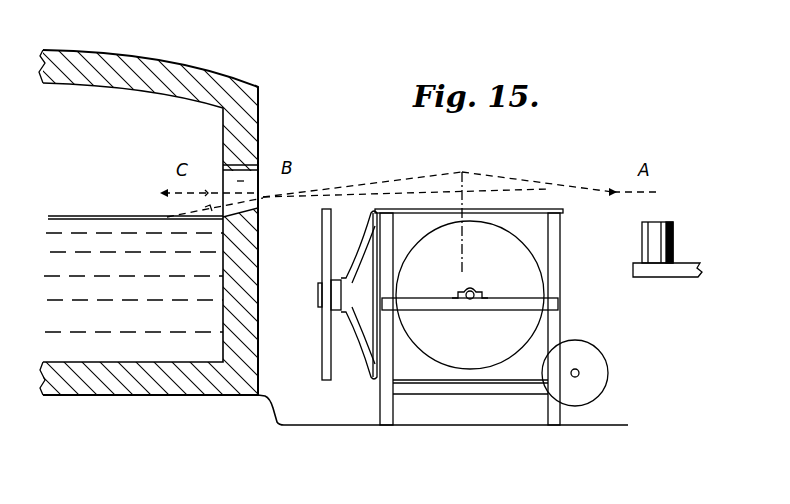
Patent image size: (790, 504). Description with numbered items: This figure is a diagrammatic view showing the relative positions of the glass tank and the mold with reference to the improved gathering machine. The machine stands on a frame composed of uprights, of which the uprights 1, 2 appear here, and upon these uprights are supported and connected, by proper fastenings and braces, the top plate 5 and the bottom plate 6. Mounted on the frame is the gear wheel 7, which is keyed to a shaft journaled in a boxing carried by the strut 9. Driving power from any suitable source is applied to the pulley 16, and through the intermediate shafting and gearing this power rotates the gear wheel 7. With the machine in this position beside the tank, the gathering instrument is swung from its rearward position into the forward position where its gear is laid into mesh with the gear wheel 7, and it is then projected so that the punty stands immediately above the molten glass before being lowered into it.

The upright 1 is at (380, 403).
The upright 2 is at (548, 404).
The top plate 5 is at (534, 213).
The bottom plate 6 is at (509, 380).
The gear wheel 7 is at (322, 366).
The strut 9 is at (361, 341).
The pulley 16 is at (604, 348).